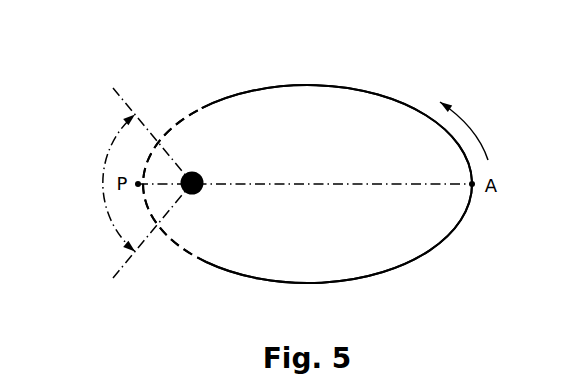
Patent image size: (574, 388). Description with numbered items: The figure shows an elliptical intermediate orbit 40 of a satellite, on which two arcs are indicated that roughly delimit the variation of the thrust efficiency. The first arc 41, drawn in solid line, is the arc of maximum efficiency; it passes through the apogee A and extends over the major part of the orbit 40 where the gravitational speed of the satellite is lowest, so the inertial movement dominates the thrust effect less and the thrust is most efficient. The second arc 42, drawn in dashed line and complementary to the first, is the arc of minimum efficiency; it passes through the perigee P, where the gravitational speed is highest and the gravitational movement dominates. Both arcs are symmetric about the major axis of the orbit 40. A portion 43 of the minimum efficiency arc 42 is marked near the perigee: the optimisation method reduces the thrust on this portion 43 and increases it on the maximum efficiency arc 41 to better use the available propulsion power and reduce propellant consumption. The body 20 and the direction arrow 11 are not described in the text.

The intermediate orbit 40 is at (300, 83).
The first arc 41 is at (427, 252).
The second arc 42 is at (179, 118).
The component / body 20 is at (200, 193).
The direction of rotation arrow 11 is at (478, 132).
The portion of the minimum efficiency arc 43 is at (103, 184).